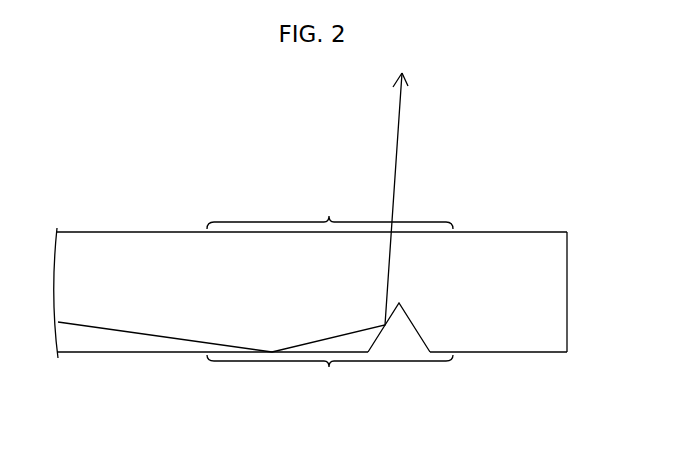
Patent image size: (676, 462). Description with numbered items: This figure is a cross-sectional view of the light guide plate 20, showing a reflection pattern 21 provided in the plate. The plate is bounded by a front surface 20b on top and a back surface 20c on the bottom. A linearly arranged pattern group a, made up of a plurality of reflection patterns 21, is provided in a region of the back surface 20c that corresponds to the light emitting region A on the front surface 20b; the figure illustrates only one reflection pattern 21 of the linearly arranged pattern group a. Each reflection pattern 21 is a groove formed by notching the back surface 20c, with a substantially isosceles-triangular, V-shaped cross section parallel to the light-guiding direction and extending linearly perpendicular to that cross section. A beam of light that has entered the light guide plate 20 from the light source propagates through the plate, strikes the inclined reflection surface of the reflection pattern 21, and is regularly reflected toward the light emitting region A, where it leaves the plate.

The light guide plate 20 is at (546, 227).
The front surface 20b is at (487, 231).
The back surface 20c is at (485, 354).
The reflection pattern 21 is at (402, 348).
The light emitting region A is at (330, 211).
The linearly arranged pattern group a is at (330, 376).